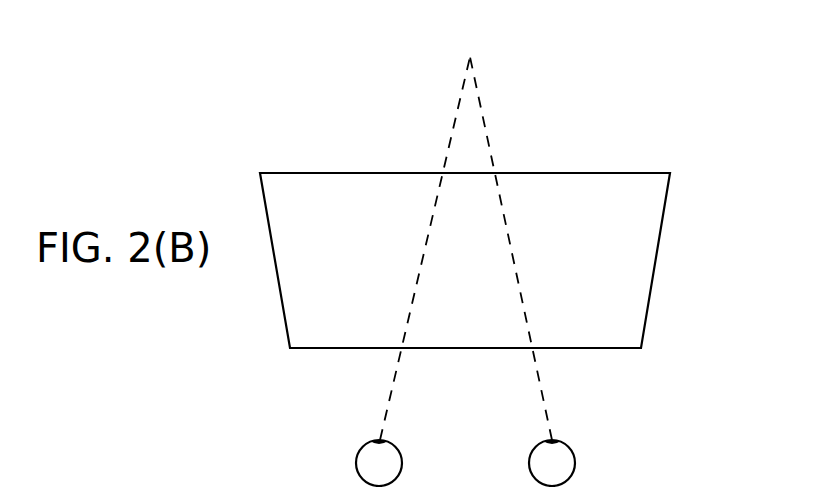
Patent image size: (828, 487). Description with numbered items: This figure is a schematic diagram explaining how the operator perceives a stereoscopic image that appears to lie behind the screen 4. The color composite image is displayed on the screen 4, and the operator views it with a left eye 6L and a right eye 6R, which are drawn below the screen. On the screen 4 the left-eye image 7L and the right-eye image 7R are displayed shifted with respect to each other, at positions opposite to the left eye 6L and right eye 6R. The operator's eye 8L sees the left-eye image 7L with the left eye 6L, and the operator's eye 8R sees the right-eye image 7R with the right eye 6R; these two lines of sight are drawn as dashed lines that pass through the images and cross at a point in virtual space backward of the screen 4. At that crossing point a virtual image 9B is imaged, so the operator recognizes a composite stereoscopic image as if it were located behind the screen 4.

The screen 4 is at (655, 270).
The left eye 6L is at (356, 463).
The right eye 6R is at (575, 461).
The left-eye image 7L is at (408, 246).
The right-eye image 7R is at (522, 246).
The operator's eye line (left) 8L is at (393, 387).
The operator's eye line (right) 8R is at (542, 387).
The virtual image 9B is at (492, 19).